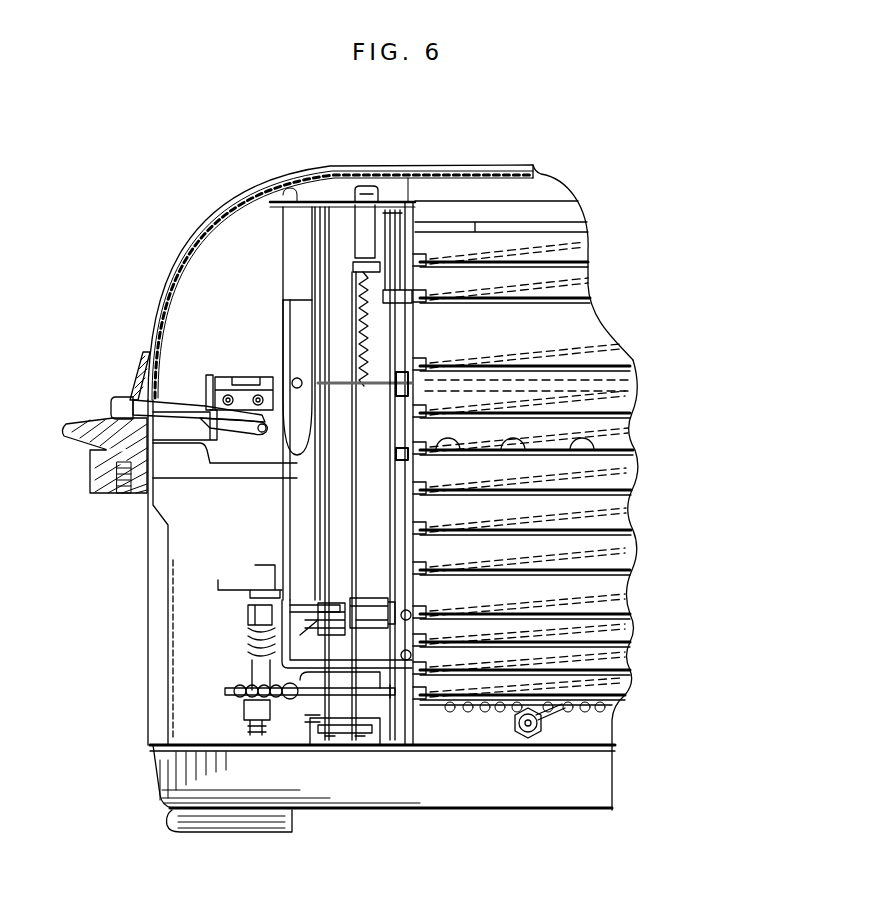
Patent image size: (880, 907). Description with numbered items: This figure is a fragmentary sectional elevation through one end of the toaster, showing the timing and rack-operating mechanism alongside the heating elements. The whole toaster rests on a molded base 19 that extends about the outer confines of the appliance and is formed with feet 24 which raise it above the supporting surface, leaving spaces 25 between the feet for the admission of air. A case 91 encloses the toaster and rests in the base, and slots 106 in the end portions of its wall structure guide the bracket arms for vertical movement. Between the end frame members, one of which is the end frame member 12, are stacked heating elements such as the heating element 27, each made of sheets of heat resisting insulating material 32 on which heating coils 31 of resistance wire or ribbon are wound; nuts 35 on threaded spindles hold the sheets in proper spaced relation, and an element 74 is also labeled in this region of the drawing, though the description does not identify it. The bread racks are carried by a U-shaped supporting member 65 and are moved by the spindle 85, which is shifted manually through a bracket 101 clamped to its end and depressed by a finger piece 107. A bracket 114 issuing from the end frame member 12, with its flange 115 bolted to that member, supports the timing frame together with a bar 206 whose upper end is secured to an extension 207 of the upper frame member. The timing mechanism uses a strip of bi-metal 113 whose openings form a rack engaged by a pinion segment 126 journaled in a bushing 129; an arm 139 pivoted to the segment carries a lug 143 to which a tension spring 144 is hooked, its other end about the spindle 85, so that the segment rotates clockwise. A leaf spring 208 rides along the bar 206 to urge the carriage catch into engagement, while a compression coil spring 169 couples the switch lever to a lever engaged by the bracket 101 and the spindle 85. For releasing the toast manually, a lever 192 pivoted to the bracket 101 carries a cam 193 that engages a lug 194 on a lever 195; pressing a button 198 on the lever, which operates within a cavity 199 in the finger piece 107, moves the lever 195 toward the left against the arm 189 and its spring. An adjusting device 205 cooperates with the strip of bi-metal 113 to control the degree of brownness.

The end frame member 12 is at (405, 532).
The base 19 is at (158, 768).
The feet 24 is at (196, 833).
The spaces 25 is at (355, 820).
The heating element 27 is at (510, 243).
The heating coils 31 is at (605, 612).
The sheets of heat resisting insulating material 32 is at (585, 678).
The nuts 35 is at (520, 733).
The U-shaped supporting member 65 is at (405, 462).
The louver slat 74 is at (555, 300).
The spindle 85 is at (350, 382).
The case 91 is at (168, 280).
The bracket 101 is at (236, 478).
The slots 106 is at (148, 503).
The finger piece 107 is at (102, 482).
The strip of bi-metal 113 is at (358, 752).
The bracket 114 is at (322, 672).
The flange 115 is at (408, 628).
The pinion segment 126 is at (372, 618).
The bushing 129 is at (330, 604).
The arm 139 is at (378, 450).
The lug 143 is at (368, 268).
The tension spring 144 is at (362, 320).
The compression coil spring 169 is at (252, 650).
The arm 189 is at (210, 373).
The lever 192 is at (140, 374).
The cam 193 is at (215, 400).
The lug 194 is at (210, 428).
The lever 195 is at (212, 455).
The button 198 is at (105, 403).
The cavity 199 is at (112, 440).
The adjusting device 205 is at (230, 695).
The bar 206 is at (296, 252).
The extension 207 is at (272, 210).
The leaf spring 208 is at (290, 344).